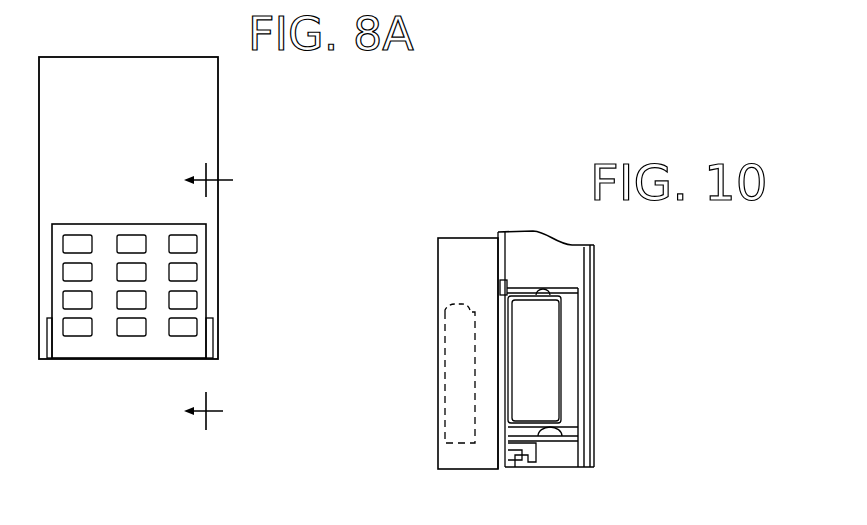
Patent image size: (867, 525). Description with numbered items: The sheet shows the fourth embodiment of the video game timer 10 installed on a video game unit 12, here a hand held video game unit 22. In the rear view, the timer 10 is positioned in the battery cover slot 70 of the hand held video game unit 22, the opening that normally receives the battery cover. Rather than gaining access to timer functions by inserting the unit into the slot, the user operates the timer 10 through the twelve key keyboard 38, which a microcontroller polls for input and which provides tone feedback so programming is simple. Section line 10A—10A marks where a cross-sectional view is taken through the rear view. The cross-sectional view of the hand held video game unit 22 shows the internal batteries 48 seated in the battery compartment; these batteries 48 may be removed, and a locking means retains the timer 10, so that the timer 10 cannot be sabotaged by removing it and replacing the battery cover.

In FIG. 8A, the video game timer 10 is at (111, 376).
In FIG. 10, the video game timer 10 is at (414, 388).
In FIG. 8A, the video game unit 12 is at (150, 48).
In FIG. 10, the video game unit 12 is at (547, 226).
In FIG. 8A, the hand held video game unit 22 is at (70, 56).
In FIG. 10, the hand held video game unit 22 is at (511, 230).
In FIG. 8A, the keyboard 38 is at (196, 300).
In FIG. 8A, the battery cover slot 70 is at (217, 337).
In FIG. 10, the internal batteries 48 is at (552, 389).
In FIG. 8A, the section line 10A— 10A is at (200, 294).